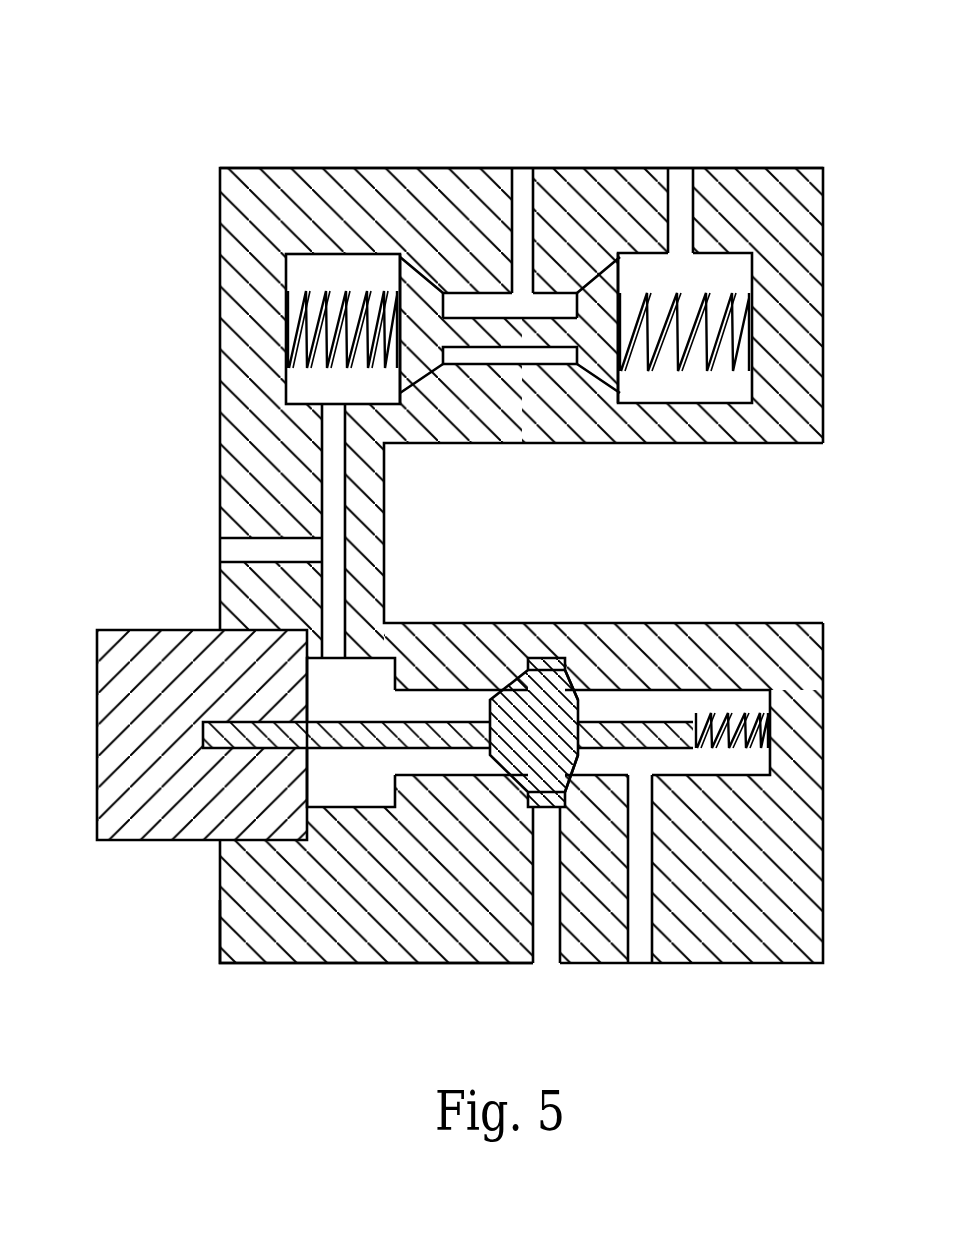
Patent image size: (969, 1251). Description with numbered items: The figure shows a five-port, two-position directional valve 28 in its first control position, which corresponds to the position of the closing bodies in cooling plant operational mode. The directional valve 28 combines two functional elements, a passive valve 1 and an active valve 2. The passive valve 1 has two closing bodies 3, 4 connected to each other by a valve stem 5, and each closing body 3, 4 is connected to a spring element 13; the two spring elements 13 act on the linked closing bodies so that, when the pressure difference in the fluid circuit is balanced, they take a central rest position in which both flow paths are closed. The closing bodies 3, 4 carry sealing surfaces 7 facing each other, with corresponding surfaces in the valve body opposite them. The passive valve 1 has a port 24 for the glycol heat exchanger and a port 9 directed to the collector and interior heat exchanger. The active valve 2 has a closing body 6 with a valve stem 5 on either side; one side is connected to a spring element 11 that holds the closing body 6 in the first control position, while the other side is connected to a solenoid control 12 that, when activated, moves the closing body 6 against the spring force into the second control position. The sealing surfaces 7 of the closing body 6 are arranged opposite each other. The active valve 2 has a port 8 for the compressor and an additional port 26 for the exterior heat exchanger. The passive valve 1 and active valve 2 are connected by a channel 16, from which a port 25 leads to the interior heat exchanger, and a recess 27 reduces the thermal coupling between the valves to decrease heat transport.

The passive valve 1 is at (232, 222).
The active valve 2 is at (250, 928).
The closing body 3 is at (399, 262).
The closing body 4 is at (622, 257).
The valve stem 5 is at (498, 312).
The closing body 6 is at (580, 772).
The sealing surfaces 7 is at (440, 292).
The port 8 is at (543, 940).
The port 9 is at (525, 182).
The spring element 11 is at (770, 716).
The solenoid control 12 is at (145, 660).
The spring element 13 is at (290, 302).
The channel 16 is at (332, 470).
The port 24 is at (683, 183).
The port 25 is at (236, 548).
The port 26 is at (642, 940).
The recess 27 is at (782, 507).
The directional valve 28 is at (275, 52).